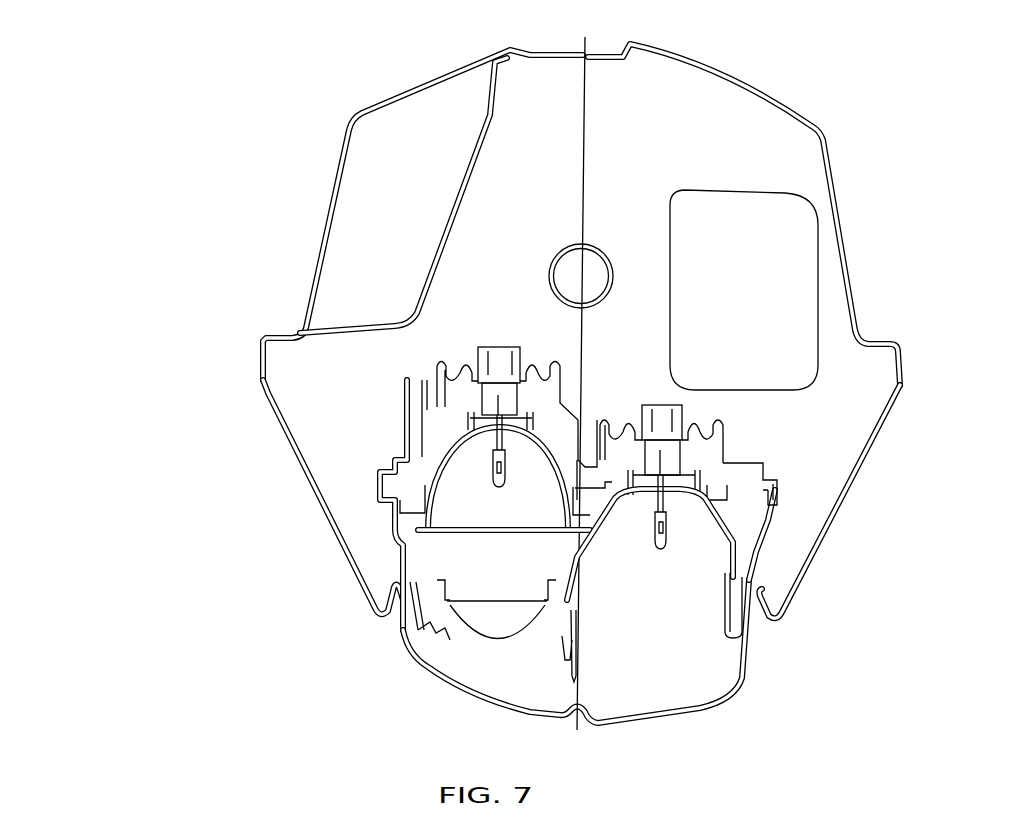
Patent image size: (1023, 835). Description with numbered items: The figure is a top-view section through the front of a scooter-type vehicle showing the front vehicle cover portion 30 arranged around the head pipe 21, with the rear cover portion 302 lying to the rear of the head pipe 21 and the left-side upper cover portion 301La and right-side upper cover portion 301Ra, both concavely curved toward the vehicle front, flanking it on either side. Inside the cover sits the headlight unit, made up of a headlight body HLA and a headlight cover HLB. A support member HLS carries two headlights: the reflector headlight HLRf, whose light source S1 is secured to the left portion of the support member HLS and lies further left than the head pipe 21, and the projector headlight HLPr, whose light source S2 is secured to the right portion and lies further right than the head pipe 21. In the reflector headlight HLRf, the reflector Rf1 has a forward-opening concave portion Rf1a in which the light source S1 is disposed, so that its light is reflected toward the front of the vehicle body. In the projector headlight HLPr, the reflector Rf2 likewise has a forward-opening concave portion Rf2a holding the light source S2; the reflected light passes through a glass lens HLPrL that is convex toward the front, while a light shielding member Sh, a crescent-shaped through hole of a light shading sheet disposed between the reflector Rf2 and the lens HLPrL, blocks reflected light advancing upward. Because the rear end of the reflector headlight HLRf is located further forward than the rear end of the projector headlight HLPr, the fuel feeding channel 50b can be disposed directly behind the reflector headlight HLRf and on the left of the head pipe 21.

The front vehicle cover portion 30 is at (925, 360).
The rear cover portion 302 is at (835, 198).
The left-side upper cover portion 301La is at (842, 503).
The right-side upper cover portion 301Ra is at (310, 490).
The head pipe 21 is at (557, 252).
The fuel feeding channel 50b is at (735, 205).
The support member HLS is at (428, 392).
The headlight cover HLB is at (702, 700).
The reflector headlight HLRf is at (745, 558).
The headlight body HLA is at (792, 476).
The reflector Rf1 is at (695, 510).
The concave portion Rf1a is at (650, 544).
The reflector Rf2 is at (472, 446).
The concave portion Rf2a is at (553, 463).
The light source S1 is at (652, 425).
The light source S2 is at (480, 350).
The light shielding member Sh is at (443, 530).
The projector headlight HLPr is at (493, 666).
The glass lens HLPrL is at (488, 628).